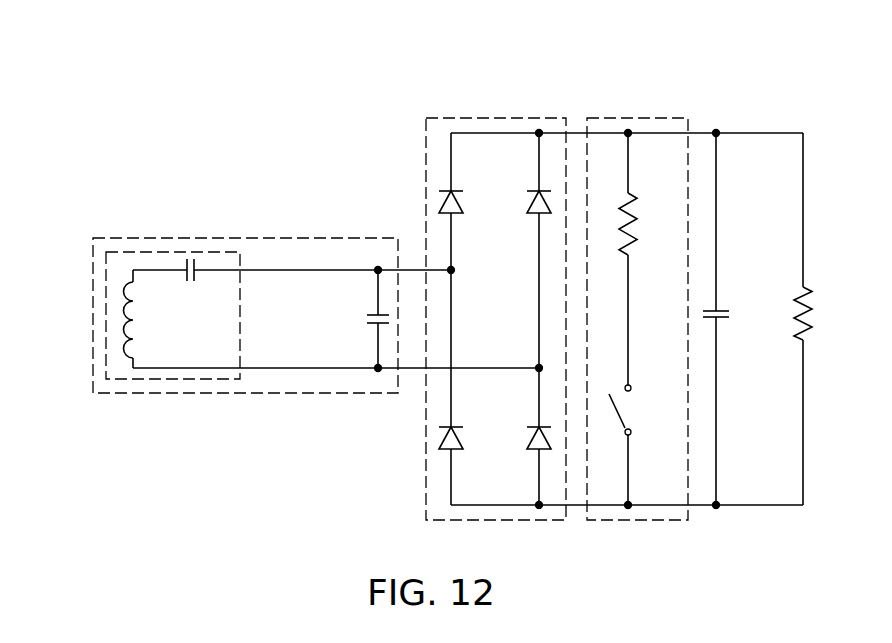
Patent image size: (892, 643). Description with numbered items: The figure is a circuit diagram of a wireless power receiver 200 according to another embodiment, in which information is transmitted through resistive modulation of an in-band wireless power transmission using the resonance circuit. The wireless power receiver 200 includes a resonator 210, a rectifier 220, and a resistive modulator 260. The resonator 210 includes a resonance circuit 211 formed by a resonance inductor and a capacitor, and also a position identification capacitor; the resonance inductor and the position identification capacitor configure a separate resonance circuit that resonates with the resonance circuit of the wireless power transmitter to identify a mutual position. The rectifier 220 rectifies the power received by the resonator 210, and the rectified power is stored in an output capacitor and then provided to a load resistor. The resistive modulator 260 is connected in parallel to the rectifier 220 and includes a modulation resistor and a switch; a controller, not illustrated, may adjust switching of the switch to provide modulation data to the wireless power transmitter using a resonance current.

The wireless power receiver 200 is at (477, 31).
The resonator 210 is at (367, 238).
The resonance circuit 211 is at (106, 320).
The rectifier 220 is at (537, 118).
The resistive modulator 260 is at (660, 118).